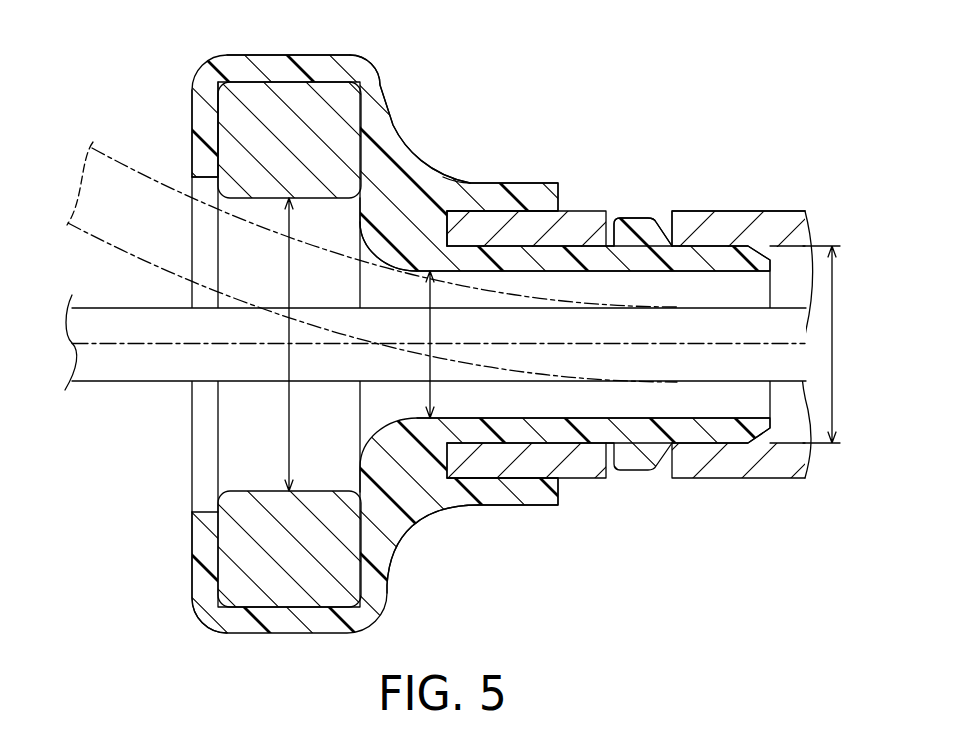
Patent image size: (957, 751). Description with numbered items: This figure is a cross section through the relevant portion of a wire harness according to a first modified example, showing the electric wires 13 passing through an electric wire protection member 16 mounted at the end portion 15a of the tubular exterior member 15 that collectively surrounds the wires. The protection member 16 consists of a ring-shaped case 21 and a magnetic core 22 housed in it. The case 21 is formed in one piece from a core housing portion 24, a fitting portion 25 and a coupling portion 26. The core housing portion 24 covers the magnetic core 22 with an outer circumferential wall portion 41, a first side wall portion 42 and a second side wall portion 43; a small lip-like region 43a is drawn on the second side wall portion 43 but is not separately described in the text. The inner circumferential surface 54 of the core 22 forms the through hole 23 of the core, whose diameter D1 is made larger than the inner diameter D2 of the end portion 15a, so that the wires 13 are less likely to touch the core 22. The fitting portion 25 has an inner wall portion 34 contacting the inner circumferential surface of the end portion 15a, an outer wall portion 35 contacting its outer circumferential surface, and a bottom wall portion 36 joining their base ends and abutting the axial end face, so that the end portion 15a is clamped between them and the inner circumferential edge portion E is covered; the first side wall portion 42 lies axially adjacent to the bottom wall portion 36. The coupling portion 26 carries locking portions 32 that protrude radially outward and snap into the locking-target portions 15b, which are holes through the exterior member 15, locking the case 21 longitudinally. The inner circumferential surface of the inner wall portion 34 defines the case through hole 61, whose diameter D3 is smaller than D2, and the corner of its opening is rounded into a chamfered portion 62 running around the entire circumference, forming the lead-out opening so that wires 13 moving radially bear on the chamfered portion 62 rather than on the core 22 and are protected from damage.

The electric wire 13 is at (125, 163).
The exterior member 15 is at (743, 211).
The end portion 15a is at (532, 220).
The locking-target portion 15b is at (667, 211).
The electric wire protection member 16 is at (183, 574).
The case 21 is at (388, 595).
The magnetic core 22 is at (290, 84).
The through hole 23 is at (247, 491).
The inner circumferential surface 54 is at (249, 549).
The core housing portion 24 is at (232, 56).
The fitting portion 25 is at (485, 277).
The coupling portion 26 is at (693, 448).
The locking portion 32 is at (638, 214).
The inner wall portion 34 is at (467, 417).
The outer wall portion 35 is at (498, 493).
The bottom wall portion 36 is at (440, 465).
The outer circumferential wall portion 41 is at (318, 55).
The first side wall portion 42 is at (370, 125).
The second side wall portion 43 is at (193, 118).
The side wall lip 43a is at (207, 180).
The through hole 61 is at (360, 406).
The chamfered portion 62 is at (403, 270).
The inner circumferential edge portion E is at (440, 246).
The diameter of the through hole D1 is at (287, 420).
The inner diameter of the end portion D2 is at (834, 344).
The diameter of the through hole D3 is at (428, 328).